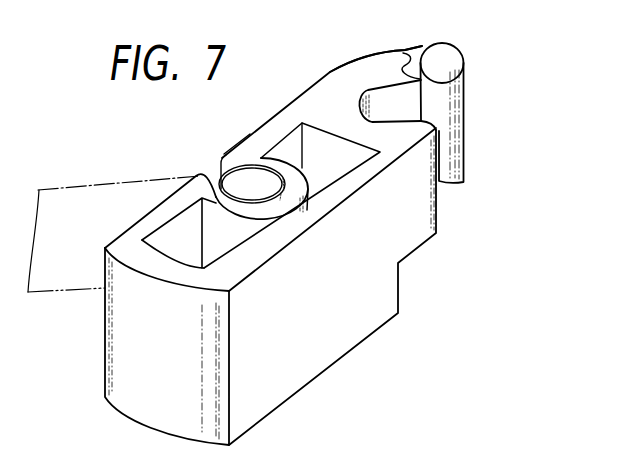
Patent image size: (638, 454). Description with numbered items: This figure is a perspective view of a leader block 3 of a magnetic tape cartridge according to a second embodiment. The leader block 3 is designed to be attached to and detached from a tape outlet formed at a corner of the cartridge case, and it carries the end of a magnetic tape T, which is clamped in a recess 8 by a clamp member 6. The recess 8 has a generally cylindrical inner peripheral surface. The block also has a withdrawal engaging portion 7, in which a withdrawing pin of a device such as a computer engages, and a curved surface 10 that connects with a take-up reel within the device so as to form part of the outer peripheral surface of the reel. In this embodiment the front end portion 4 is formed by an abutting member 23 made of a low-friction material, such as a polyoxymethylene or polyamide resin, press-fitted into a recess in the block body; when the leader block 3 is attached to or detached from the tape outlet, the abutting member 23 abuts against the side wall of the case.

The leader block 3 is at (328, 327).
The front end portion 4 is at (465, 50).
The clamp member 6 is at (245, 188).
The withdrawal engaging portion 7 is at (378, 108).
The recess 8 is at (297, 181).
The curved surface 10 is at (137, 402).
The abutting member 23 is at (453, 103).
The magnetic tape T is at (66, 288).